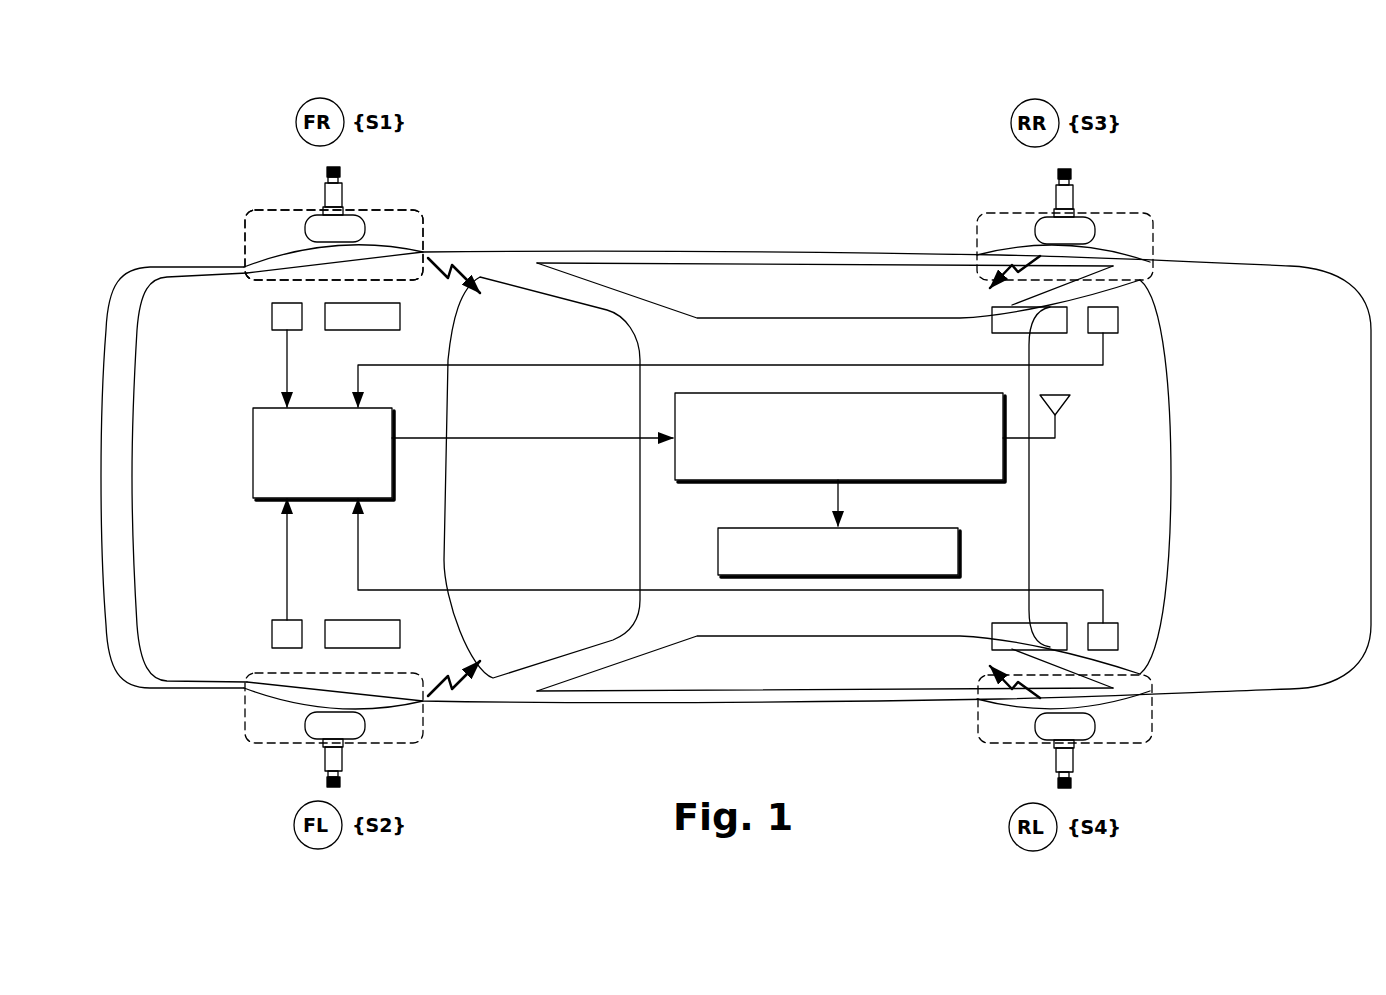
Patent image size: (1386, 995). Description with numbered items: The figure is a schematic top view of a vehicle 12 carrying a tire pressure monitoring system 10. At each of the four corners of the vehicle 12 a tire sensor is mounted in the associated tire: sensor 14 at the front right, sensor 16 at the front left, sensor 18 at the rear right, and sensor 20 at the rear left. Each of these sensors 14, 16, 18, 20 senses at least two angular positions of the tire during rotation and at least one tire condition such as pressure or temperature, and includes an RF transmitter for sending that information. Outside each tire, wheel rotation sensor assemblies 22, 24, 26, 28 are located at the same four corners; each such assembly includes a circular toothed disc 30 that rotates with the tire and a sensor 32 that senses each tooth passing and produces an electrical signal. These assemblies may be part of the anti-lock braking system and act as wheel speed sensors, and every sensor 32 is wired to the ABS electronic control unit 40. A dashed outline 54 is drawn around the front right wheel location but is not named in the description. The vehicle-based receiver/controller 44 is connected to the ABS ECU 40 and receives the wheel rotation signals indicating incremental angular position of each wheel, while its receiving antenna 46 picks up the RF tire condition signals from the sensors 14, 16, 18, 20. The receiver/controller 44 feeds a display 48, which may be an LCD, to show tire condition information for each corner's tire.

The tire pressure monitoring system 10 is at (1203, 128).
The vehicle 12 is at (1279, 264).
The sensor 14 is at (340, 196).
The sensor 16 is at (308, 724).
The sensor 18 is at (1088, 232).
The sensor 20 is at (1082, 725).
The wheel rotation sensor assembly 22 is at (288, 243).
The wheel rotation sensor assembly 24 is at (258, 663).
The wheel rotation sensor assembly 26 is at (1117, 379).
The wheel rotation sensor assembly 28 is at (1126, 600).
The toothed disc 30 is at (367, 330).
The sensor 32 is at (272, 318).
The ABS electronic control unit 40 is at (253, 433).
The vehicle-based receiver/controller 44 is at (1005, 458).
The receiving antenna 46 is at (1068, 401).
The display 48 is at (960, 561).
The wheel location 54 is at (425, 220).